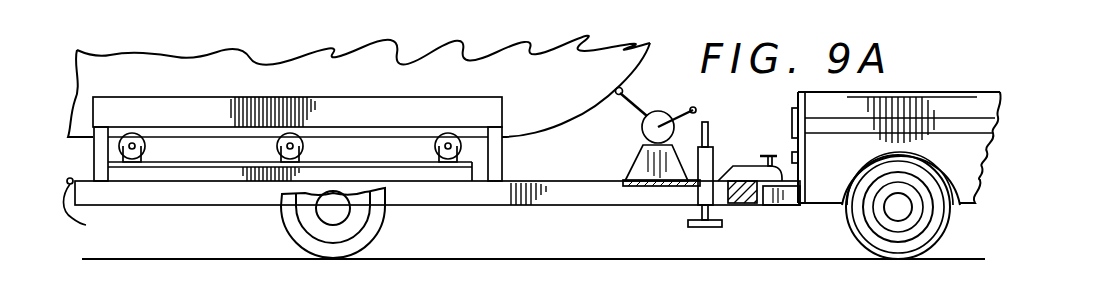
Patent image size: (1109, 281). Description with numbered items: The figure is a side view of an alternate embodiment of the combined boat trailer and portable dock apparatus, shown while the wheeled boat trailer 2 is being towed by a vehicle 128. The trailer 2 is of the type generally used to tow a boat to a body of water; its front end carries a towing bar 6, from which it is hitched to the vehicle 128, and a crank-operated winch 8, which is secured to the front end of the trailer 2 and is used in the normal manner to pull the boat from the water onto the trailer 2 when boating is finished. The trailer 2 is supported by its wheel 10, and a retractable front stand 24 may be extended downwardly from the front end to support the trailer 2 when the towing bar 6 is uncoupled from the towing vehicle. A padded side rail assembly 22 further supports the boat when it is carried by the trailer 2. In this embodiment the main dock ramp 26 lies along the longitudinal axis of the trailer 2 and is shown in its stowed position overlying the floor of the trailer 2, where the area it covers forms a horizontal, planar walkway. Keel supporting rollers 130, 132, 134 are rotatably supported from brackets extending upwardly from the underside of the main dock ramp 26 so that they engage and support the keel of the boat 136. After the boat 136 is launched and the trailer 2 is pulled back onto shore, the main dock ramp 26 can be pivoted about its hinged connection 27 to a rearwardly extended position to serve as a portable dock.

The wheeled boat trailer 2 is at (563, 177).
The towing bar 6 is at (742, 166).
The crank-operated winch 8 is at (657, 112).
The wheel 10 is at (385, 217).
The padded side rail assembly 22 is at (411, 114).
The retractable front stand 24 is at (720, 224).
The main dock ramp 26 is at (322, 170).
The hinged connection 27 is at (90, 208).
The vehicle 128 is at (798, 95).
The keel supporting roller 130 is at (436, 146).
The keel supporting roller 132 is at (277, 146).
The keel supporting roller 134 is at (146, 148).
The boat 136 is at (579, 86).